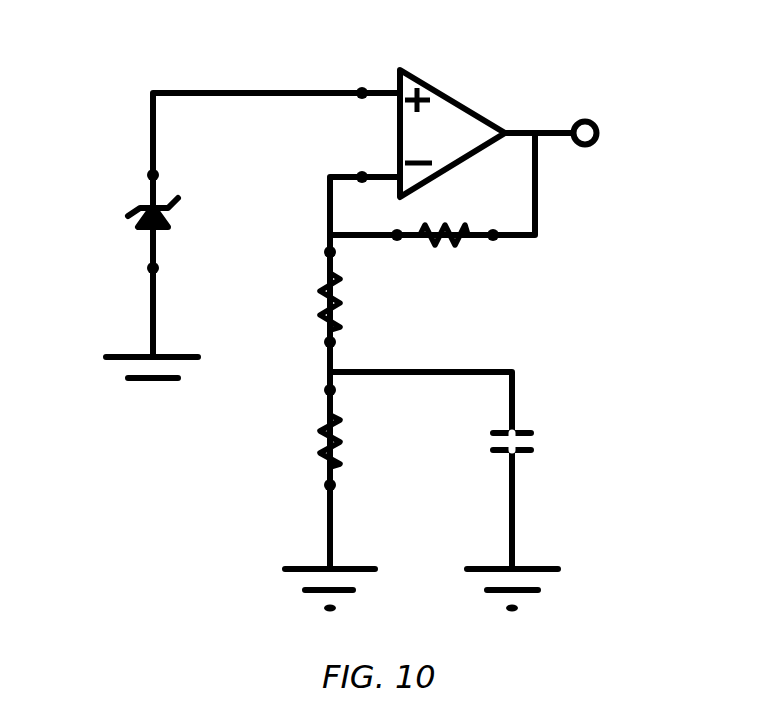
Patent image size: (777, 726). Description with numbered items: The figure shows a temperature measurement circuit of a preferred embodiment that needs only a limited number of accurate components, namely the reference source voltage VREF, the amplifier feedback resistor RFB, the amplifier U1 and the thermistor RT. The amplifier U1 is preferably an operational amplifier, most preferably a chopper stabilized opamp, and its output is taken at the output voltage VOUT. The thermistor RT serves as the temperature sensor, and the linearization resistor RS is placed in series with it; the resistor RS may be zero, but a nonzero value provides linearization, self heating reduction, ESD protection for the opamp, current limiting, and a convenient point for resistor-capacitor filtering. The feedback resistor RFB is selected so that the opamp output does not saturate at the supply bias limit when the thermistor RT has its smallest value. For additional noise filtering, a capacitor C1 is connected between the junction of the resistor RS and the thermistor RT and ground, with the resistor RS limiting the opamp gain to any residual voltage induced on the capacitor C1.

The amplifier U1 is at (452, 133).
The output voltage VOUT is at (629, 113).
The reference source voltage VREF is at (113, 226).
The amplifier feedback resistor RFB is at (456, 268).
The linearization resistor RS is at (355, 302).
The thermistor RT is at (352, 445).
The capacitor C1 is at (536, 450).